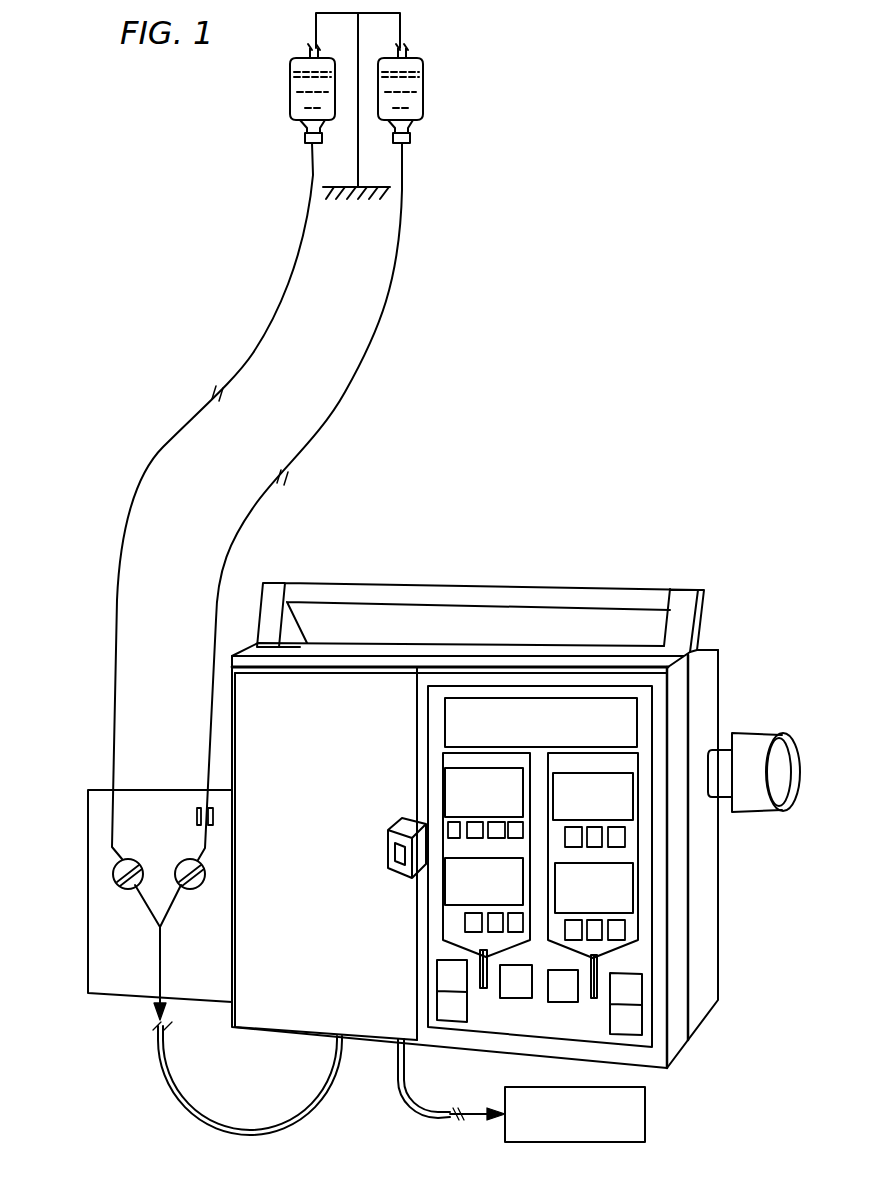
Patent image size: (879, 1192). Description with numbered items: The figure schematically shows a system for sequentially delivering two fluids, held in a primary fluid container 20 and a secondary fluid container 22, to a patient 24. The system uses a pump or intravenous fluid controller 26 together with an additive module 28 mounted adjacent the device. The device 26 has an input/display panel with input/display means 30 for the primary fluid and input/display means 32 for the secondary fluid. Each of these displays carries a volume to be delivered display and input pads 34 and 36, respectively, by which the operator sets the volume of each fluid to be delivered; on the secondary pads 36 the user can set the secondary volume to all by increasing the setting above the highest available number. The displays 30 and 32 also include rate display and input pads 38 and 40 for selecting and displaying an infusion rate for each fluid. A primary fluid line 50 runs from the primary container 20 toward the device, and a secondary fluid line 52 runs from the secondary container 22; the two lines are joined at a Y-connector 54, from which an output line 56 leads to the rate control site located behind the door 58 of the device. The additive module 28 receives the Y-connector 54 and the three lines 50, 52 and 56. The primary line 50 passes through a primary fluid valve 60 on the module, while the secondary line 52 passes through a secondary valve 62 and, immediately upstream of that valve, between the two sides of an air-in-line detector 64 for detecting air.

The primary fluid container 20 is at (300, 113).
The secondary fluid container 22 is at (420, 100).
The patient 24 is at (562, 1126).
The pump or intravenous fluid controller 26 is at (515, 670).
The additive module 28 is at (140, 1000).
The input/display means pertaining to the primary fluid 30 is at (447, 760).
The input/display means pertaining to the secondary fluid 32 is at (632, 767).
The primary fluid volume to be delivered display and input pads 34 is at (447, 825).
The secondary fluid volume to be delivered display and input pads 36 is at (623, 837).
The primary rate display and input pads 38 is at (470, 922).
The secondary rate display and input pads 40 is at (623, 932).
The primary fluid line 50 is at (118, 622).
The secondary fluid line 52 is at (222, 560).
The Y-connector 54 is at (153, 930).
The output line 56 is at (328, 1100).
The door 58 is at (278, 1018).
The primary fluid valve 60 is at (128, 889).
The secondary valve 62 is at (194, 889).
The air-in-line detector 64 is at (195, 818).